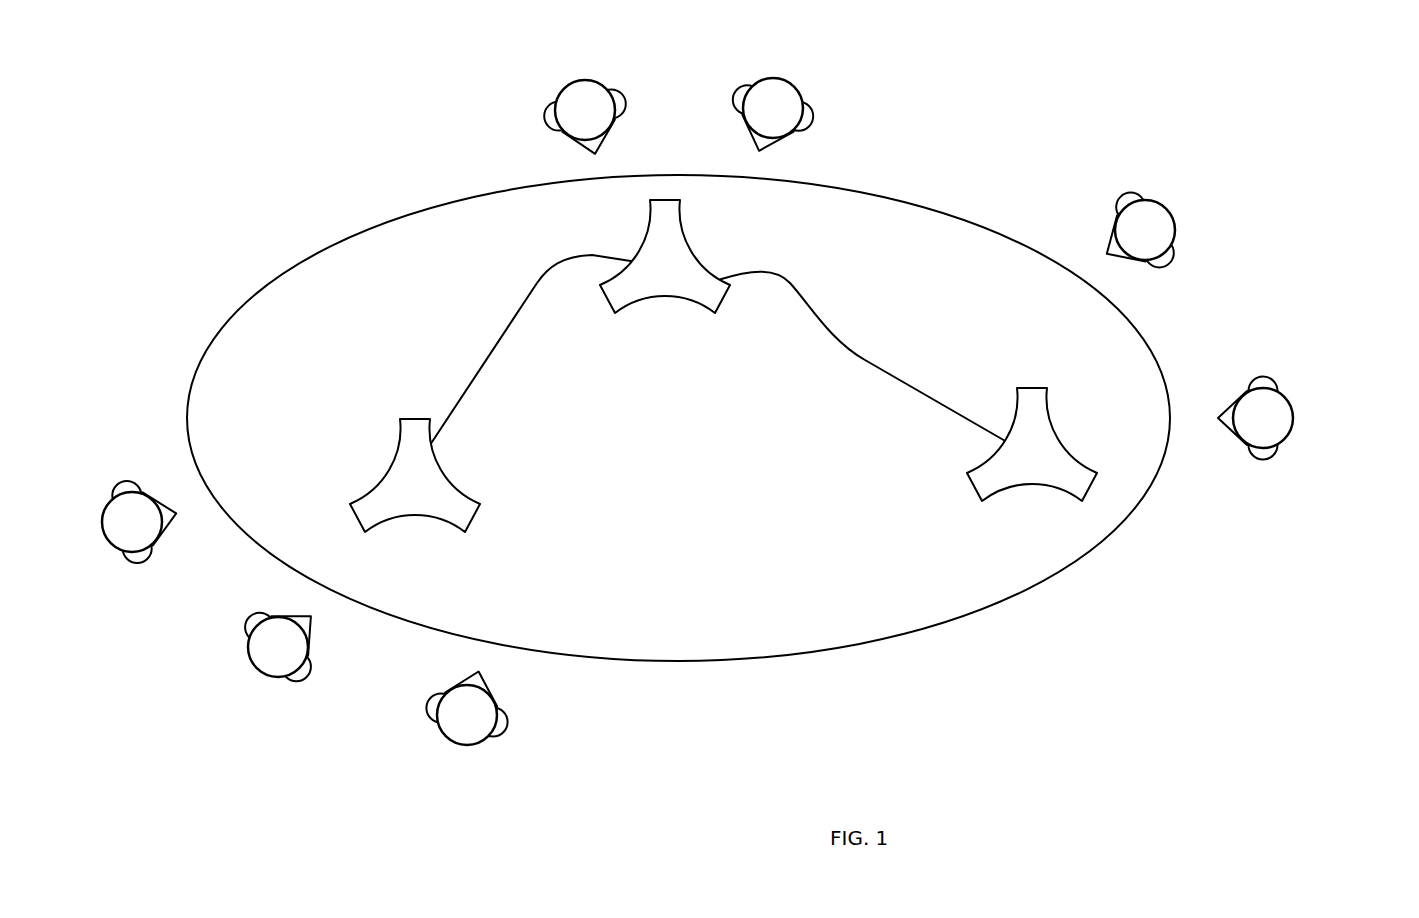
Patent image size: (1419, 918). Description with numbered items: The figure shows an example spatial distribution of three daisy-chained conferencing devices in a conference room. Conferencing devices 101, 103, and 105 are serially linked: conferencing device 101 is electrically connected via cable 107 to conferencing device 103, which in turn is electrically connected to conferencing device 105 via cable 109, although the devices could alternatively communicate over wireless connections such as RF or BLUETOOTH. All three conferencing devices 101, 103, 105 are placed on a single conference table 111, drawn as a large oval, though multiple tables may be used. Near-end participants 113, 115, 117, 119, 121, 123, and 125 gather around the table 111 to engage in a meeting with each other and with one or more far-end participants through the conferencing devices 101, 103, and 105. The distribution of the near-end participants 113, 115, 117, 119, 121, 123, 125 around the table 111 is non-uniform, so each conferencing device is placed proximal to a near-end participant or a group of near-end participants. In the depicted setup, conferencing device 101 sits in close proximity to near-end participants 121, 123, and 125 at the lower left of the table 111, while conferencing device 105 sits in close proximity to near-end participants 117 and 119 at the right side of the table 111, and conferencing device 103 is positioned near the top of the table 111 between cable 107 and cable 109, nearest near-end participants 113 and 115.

The conferencing device 101 is at (417, 418).
The conferencing device 103 is at (640, 310).
The conferencing device 105 is at (1032, 486).
The cable 107 is at (522, 315).
The cable 109 is at (797, 283).
The conference table 111 is at (363, 230).
The near-end participant 113 is at (583, 77).
The near-end participant 115 is at (782, 75).
The near-end participant 117 is at (1162, 200).
The near-end participant 119 is at (1293, 422).
The near-end participant 121 is at (455, 748).
The near-end participant 123 is at (270, 680).
The near-end participant 125 is at (100, 535).